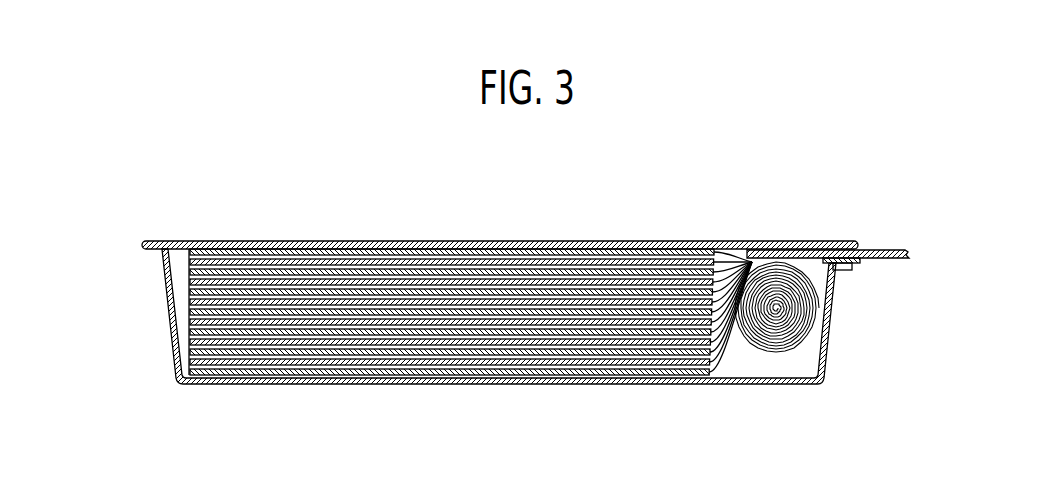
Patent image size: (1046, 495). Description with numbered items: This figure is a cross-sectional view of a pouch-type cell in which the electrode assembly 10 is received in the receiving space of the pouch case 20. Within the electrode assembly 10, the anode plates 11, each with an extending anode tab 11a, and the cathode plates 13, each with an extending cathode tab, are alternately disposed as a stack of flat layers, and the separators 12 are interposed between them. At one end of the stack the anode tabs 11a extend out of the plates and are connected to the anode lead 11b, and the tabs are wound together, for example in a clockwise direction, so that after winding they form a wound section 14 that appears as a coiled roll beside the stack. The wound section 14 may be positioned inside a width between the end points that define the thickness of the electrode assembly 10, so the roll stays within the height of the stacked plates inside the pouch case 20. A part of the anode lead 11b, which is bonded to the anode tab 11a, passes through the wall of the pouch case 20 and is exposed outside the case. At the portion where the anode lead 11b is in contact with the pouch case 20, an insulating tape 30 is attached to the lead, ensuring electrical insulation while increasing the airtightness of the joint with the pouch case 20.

The electrode assembly 10 is at (506, 300).
The anode plate 11 is at (542, 252).
The anode tab 11a is at (728, 357).
The anode lead 11b is at (880, 250).
The separator 12 is at (482, 260).
The cathode plate 13 is at (425, 249).
The wound section 14 is at (803, 327).
The pouch case 20 is at (172, 362).
The insulating tape 30 is at (855, 250).